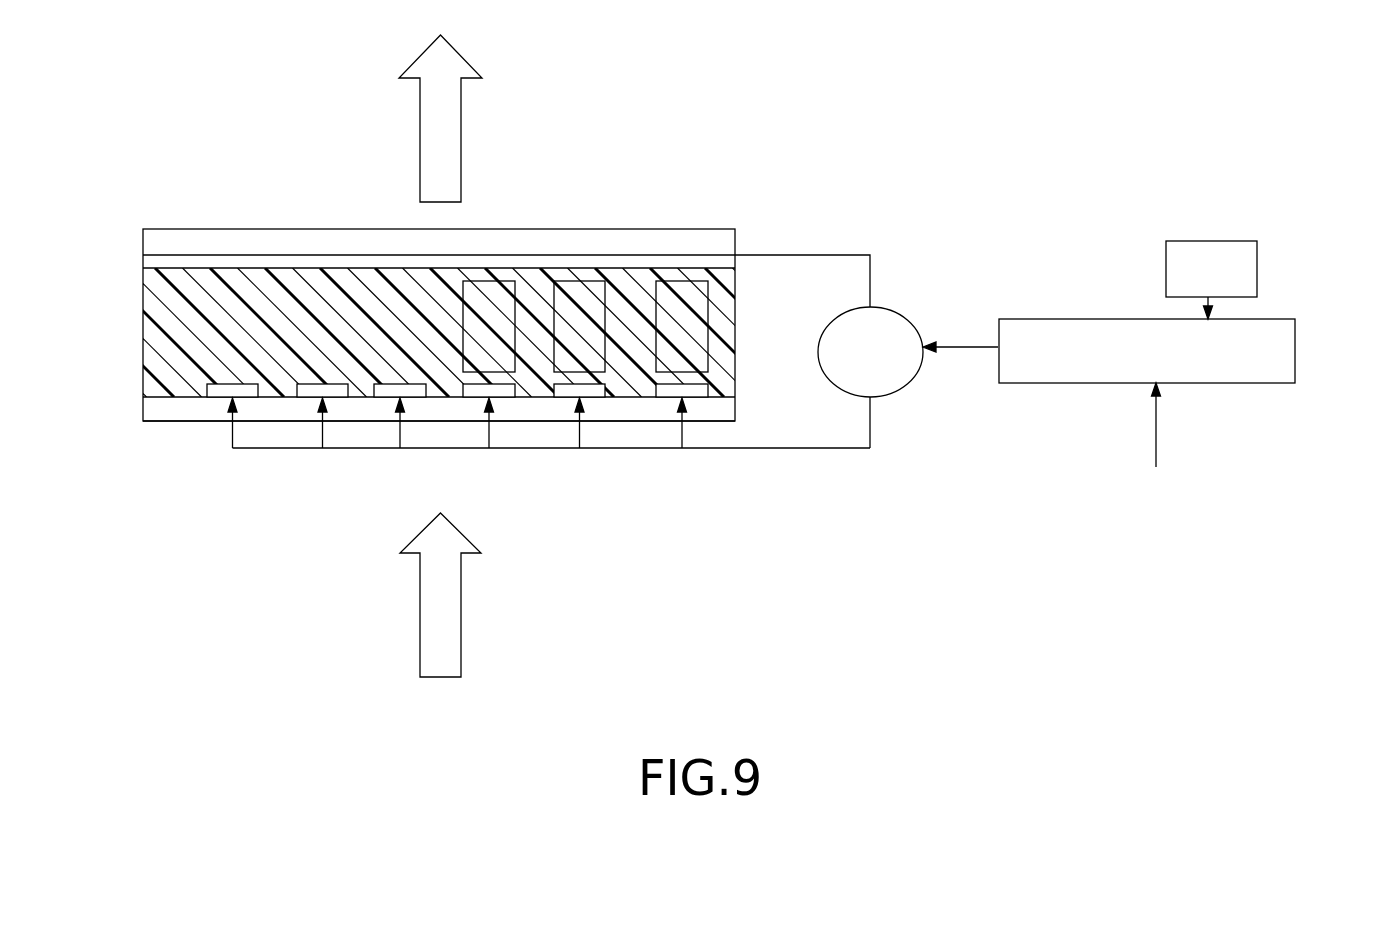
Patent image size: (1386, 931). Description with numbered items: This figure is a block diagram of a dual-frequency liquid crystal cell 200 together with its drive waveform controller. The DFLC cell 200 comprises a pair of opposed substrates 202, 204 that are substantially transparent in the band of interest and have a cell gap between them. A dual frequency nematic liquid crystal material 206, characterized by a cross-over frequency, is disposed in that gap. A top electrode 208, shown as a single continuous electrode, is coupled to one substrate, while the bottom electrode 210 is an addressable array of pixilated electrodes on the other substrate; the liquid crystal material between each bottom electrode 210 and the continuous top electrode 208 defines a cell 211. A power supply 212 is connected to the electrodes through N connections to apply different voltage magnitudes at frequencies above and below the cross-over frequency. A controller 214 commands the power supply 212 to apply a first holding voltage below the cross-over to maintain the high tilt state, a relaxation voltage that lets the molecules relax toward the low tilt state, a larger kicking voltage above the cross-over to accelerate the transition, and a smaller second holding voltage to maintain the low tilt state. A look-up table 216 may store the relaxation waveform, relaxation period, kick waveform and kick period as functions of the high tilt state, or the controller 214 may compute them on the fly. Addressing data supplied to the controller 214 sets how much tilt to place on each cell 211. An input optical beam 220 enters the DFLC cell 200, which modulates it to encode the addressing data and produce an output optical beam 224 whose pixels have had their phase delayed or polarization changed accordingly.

The dual-frequency liquid crystal cell 200 is at (120, 285).
The substrate 202 is at (191, 229).
The substrate 204 is at (150, 423).
The dual frequency nematic liquid crystal material 206 is at (158, 355).
The top electrode 208 is at (657, 256).
The bottom electrode 210 is at (667, 397).
The cell 211 is at (581, 281).
The power supply 212 is at (907, 318).
The controller 214 is at (1297, 356).
The look-up table (LUT) 216 is at (1259, 256).
The optical beam 220 is at (420, 618).
The output optical beam 224 is at (420, 122).
The number of pixels N is at (806, 440).